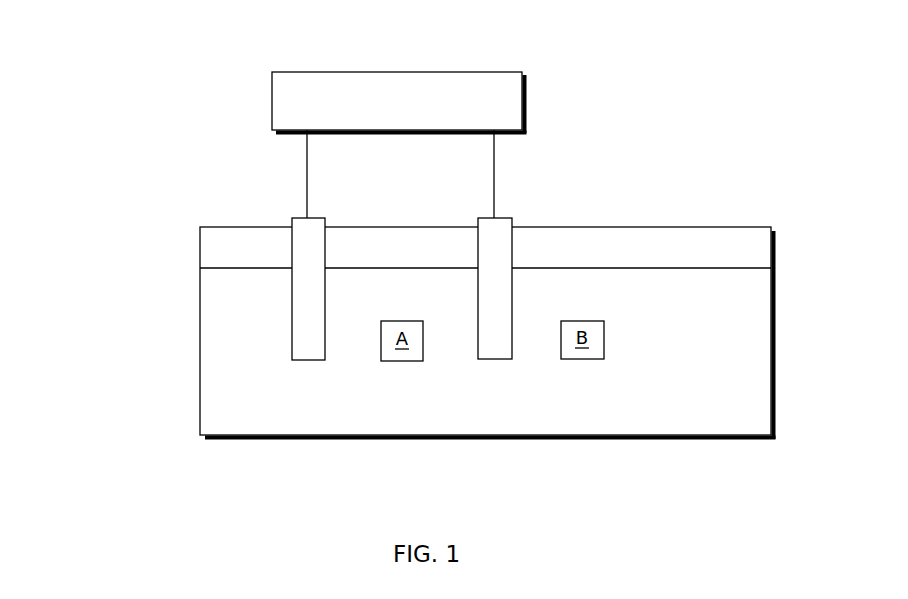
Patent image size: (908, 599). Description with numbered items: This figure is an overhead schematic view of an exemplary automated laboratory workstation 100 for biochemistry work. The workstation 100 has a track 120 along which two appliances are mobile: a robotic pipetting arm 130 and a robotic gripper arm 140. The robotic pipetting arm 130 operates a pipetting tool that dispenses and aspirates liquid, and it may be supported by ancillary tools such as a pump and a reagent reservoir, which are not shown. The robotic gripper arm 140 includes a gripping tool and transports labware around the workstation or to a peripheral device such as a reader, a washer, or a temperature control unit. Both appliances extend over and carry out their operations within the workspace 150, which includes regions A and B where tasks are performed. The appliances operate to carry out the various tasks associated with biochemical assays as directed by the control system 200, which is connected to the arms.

The automated laboratory workstation 100 is at (152, 162).
The track 120 is at (774, 245).
The robotic pipetting arm 130 is at (307, 360).
The robotic gripper arm 140 is at (497, 360).
The workspace 150 is at (752, 400).
The control system 200 is at (527, 99).